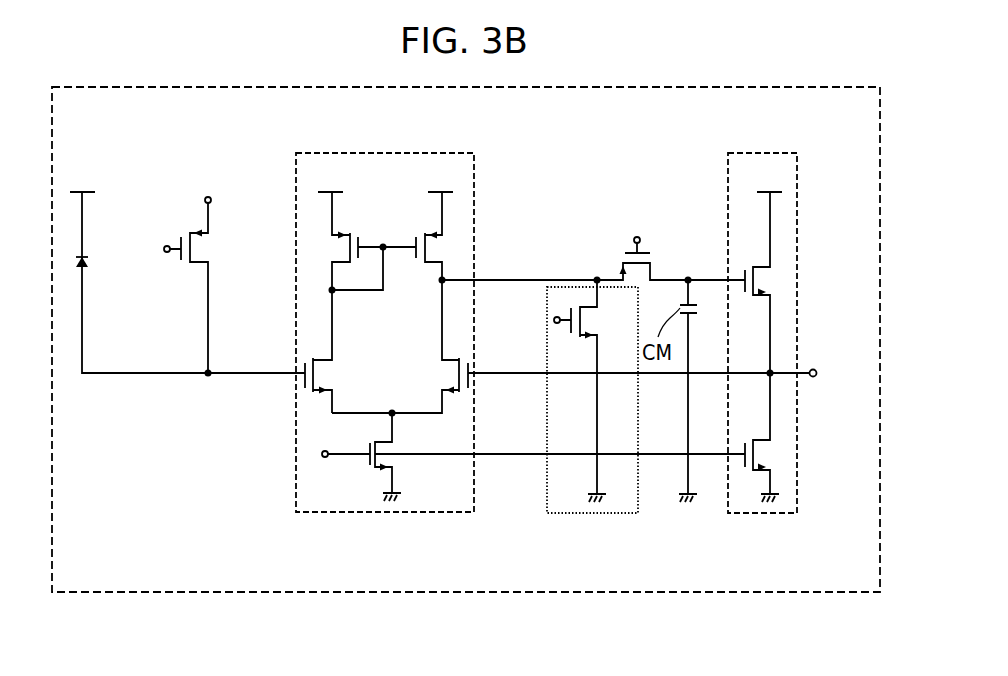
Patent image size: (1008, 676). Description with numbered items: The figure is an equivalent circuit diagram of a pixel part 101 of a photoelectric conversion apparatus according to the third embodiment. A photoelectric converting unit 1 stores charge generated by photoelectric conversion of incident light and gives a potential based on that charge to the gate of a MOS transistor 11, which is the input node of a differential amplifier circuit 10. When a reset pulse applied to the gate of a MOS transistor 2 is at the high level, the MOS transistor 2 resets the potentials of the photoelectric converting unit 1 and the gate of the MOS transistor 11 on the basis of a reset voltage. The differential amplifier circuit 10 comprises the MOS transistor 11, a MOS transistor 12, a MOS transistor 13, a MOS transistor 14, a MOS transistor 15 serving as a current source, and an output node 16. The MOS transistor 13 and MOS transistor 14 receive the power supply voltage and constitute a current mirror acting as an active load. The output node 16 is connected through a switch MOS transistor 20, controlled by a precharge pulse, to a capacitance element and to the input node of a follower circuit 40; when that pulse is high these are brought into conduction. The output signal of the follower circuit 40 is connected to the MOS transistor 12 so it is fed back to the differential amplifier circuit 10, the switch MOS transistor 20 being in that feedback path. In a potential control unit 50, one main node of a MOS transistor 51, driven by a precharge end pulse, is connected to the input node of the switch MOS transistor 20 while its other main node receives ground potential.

The photoelectric converting unit 1 is at (86, 262).
The MOS transistor 2 is at (207, 250).
The differential amplifier circuit 10 is at (383, 153).
The MOS transistor 11 is at (298, 380).
The MOS transistor 12 is at (437, 375).
The MOS transistor 13 is at (352, 235).
The MOS transistor 14 is at (422, 233).
The MOS transistor for a current source 15 is at (368, 466).
The output node 16 is at (443, 276).
The switch MOS transistor 20 is at (652, 258).
The follower circuit 40 is at (765, 153).
The potential control unit 50 is at (560, 287).
The MOS transistor 51 is at (592, 320).
The pixel part 101 is at (175, 593).